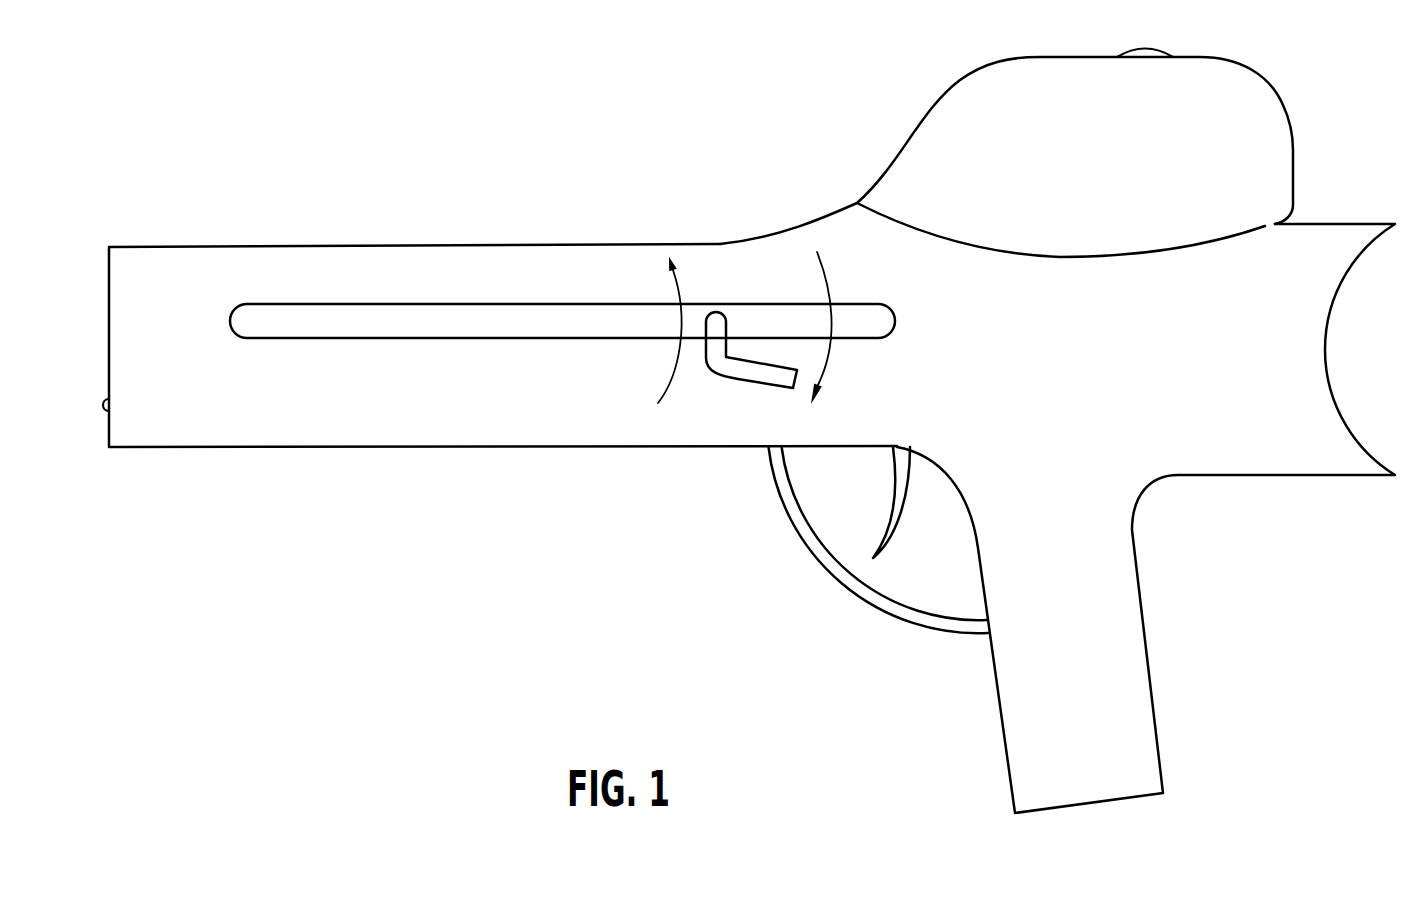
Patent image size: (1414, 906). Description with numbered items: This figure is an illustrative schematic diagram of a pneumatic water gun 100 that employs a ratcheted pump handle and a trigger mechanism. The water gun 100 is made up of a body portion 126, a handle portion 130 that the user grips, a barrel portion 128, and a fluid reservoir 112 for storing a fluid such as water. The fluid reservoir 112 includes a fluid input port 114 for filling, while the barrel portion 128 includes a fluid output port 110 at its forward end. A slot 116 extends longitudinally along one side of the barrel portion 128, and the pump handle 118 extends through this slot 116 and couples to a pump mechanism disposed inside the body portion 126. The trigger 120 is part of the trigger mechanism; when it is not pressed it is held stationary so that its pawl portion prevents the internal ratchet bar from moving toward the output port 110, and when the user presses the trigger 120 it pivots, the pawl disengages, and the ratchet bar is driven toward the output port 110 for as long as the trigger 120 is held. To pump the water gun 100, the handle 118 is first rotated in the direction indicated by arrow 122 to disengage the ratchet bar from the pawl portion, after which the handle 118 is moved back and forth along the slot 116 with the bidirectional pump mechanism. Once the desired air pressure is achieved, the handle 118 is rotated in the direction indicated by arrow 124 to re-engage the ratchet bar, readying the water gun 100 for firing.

The pneumatic water gun 100 is at (561, 140).
The fluid output port 110 is at (105, 405).
The fluid reservoir 112 is at (1017, 57).
The fluid input port 114 is at (1160, 52).
The slot 116 is at (387, 327).
The pump handle 118 is at (765, 375).
The trigger 120 is at (890, 528).
The arrow 122 is at (676, 292).
The arrow 124 is at (828, 292).
The body portion 126 is at (745, 448).
The barrel portion 128 is at (180, 247).
The handle portion 130 is at (1133, 675).